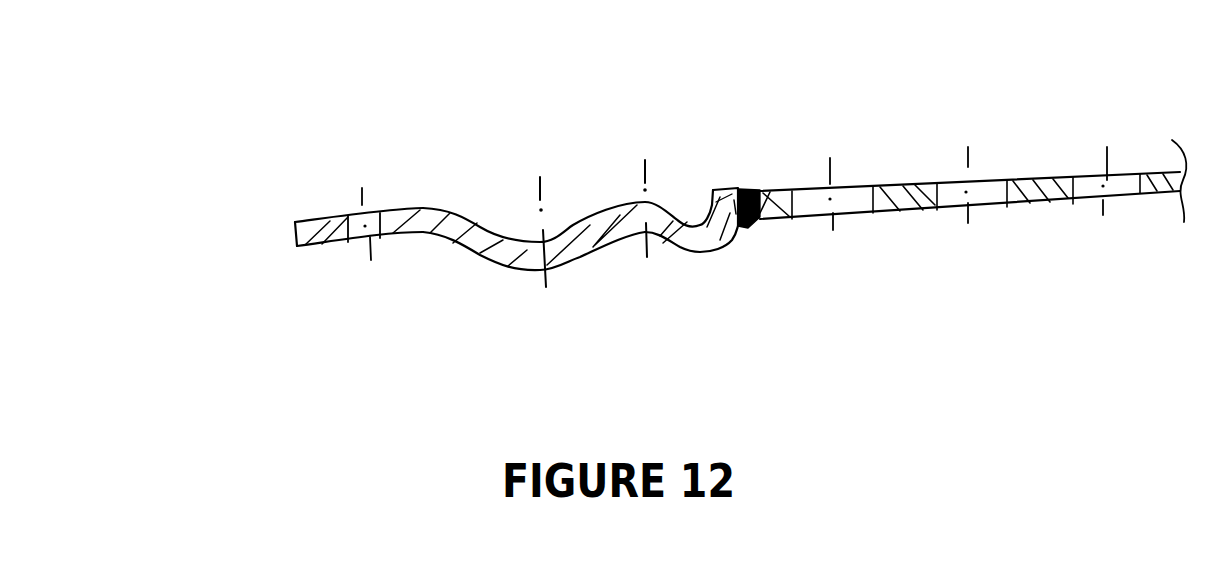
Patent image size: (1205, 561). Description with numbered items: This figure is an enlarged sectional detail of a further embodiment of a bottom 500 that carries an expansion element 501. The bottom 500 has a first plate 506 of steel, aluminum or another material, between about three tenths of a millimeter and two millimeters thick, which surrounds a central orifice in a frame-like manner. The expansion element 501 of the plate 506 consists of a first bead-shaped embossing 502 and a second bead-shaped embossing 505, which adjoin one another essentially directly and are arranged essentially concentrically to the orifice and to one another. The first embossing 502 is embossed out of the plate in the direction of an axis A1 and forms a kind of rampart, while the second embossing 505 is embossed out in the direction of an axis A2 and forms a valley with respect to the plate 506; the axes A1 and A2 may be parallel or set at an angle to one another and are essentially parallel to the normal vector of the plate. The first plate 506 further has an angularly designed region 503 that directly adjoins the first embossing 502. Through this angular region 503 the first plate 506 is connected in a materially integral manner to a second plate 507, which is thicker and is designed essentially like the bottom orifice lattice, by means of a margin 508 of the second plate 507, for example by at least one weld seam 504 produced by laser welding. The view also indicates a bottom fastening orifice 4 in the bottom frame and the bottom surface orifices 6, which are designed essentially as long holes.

The bottom 500 is at (717, 206).
The first plate 506 is at (318, 210).
The bottom fastening orifice 4 is at (358, 237).
The second bead-shaped embossing 505 is at (518, 268).
The axis A2 is at (550, 199).
The expansion element 501 is at (567, 290).
The axis A1 is at (662, 179).
The first bead-shaped embossing 502 is at (653, 217).
The angularly designed region 503 is at (725, 237).
The weld seam 504 is at (747, 190).
The margin 508 is at (760, 223).
The second plate 507 is at (1037, 214).
The bottom surface orifice 6 is at (1087, 177).